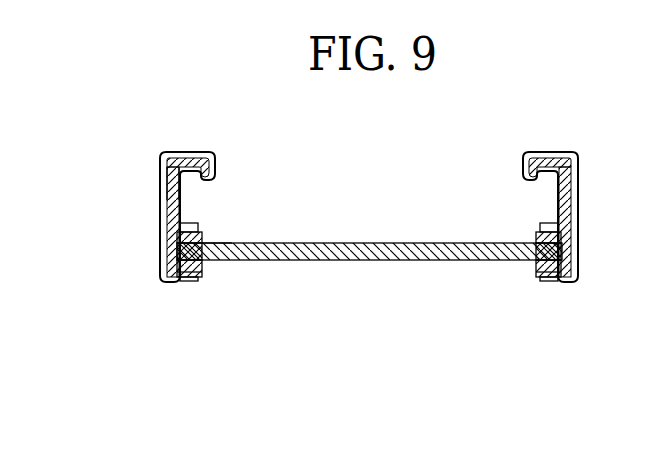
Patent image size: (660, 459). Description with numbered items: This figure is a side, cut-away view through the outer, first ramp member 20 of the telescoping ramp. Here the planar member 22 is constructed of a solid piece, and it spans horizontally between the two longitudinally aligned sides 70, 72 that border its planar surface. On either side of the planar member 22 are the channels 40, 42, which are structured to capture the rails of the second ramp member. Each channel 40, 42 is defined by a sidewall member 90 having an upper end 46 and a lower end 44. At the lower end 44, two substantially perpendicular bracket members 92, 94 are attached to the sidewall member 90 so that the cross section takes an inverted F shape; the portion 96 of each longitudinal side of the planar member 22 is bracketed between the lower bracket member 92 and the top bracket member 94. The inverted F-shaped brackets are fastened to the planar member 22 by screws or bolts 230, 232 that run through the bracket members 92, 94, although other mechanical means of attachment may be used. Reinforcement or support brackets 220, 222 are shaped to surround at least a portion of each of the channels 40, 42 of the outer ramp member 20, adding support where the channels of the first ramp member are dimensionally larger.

The first ramp member 20 is at (335, 185).
The planar member 22 is at (290, 262).
The channel 40 is at (172, 152).
The channel 42 is at (570, 153).
The lower end 44 is at (177, 262).
The upper end 46 is at (172, 177).
The longitudinally aligned side 70 is at (178, 253).
The longitudinally aligned side 72 is at (562, 254).
The sidewall member 90 is at (160, 212).
The bracket member 92 is at (180, 281).
The bracket member 94 is at (200, 235).
The portion of longitudinal side 96 is at (205, 247).
The reinforcement bracket 220 is at (195, 152).
The reinforcement bracket 222 is at (535, 152).
The bolt 230 is at (192, 280).
The bolt 232 is at (545, 283).